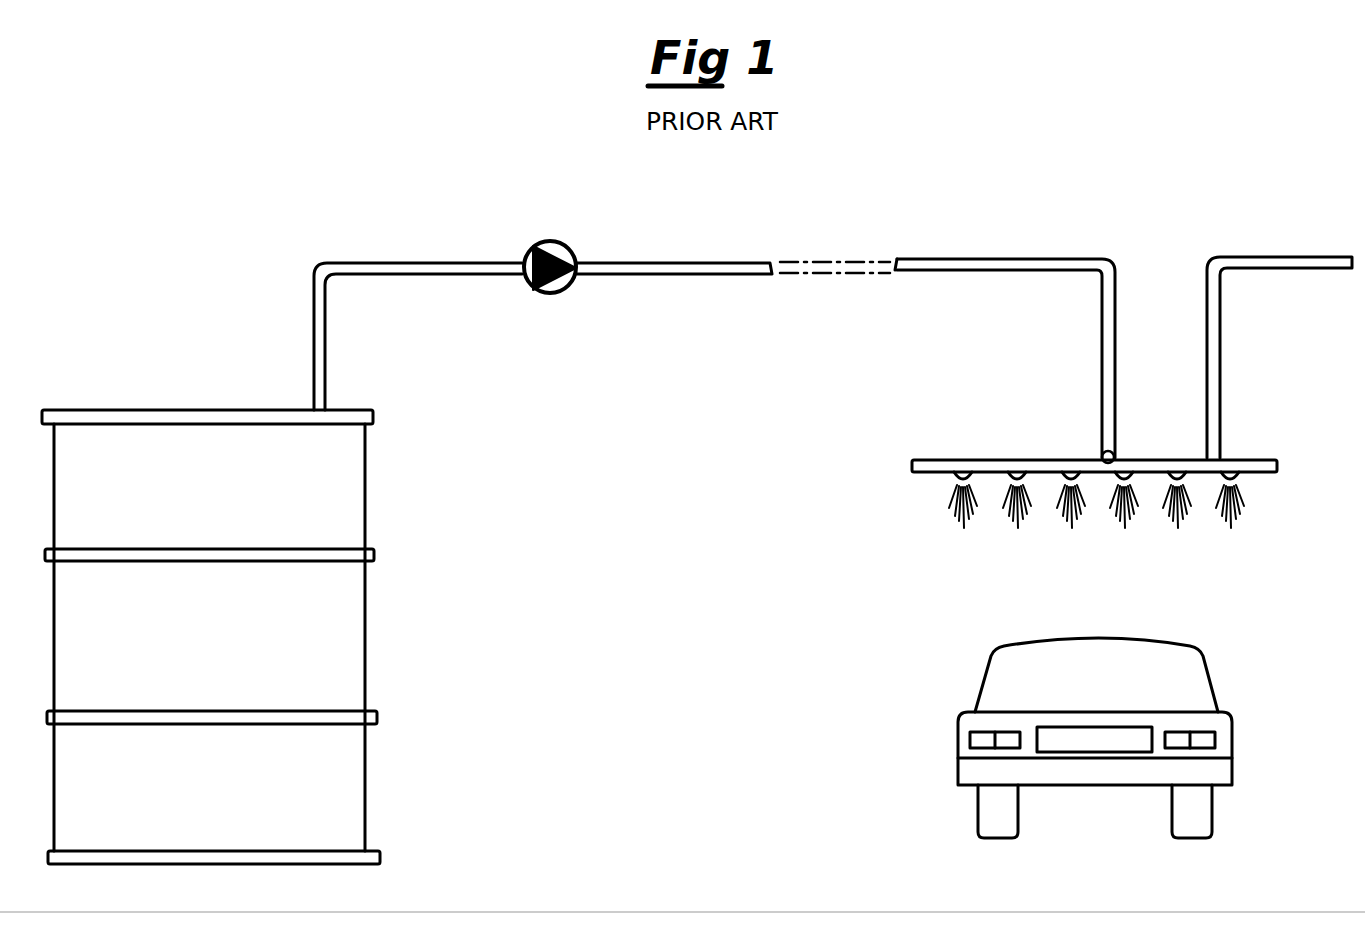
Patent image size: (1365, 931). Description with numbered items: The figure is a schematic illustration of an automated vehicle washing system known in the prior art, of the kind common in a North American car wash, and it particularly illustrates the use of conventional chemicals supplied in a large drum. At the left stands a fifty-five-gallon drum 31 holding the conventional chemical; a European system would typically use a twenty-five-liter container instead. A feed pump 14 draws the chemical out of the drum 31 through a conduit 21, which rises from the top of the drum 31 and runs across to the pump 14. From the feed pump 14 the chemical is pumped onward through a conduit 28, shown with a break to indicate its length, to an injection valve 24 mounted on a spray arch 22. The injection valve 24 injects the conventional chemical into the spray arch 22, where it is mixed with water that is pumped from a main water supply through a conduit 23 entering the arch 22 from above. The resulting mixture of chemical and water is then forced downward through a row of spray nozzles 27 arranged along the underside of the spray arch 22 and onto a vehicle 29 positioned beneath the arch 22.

The feed pump 14 is at (558, 240).
The conduit 21 is at (394, 262).
The spray arch 22 is at (979, 459).
The conduit 23 is at (1280, 257).
The injection valve 24 is at (1114, 452).
The spray nozzles 27 is at (1060, 530).
The conduit 28 is at (718, 262).
The vehicle 29 is at (968, 701).
The 55-gallon drum 31 is at (166, 410).